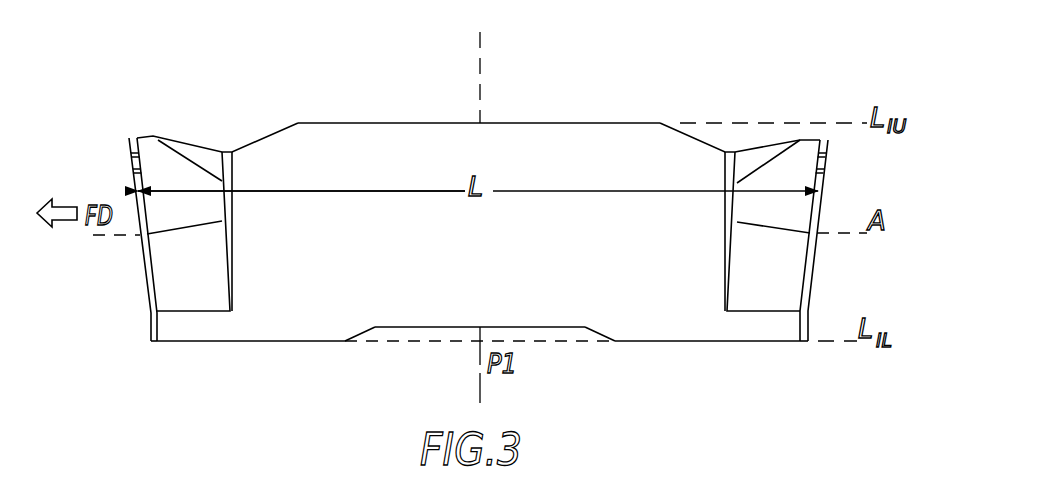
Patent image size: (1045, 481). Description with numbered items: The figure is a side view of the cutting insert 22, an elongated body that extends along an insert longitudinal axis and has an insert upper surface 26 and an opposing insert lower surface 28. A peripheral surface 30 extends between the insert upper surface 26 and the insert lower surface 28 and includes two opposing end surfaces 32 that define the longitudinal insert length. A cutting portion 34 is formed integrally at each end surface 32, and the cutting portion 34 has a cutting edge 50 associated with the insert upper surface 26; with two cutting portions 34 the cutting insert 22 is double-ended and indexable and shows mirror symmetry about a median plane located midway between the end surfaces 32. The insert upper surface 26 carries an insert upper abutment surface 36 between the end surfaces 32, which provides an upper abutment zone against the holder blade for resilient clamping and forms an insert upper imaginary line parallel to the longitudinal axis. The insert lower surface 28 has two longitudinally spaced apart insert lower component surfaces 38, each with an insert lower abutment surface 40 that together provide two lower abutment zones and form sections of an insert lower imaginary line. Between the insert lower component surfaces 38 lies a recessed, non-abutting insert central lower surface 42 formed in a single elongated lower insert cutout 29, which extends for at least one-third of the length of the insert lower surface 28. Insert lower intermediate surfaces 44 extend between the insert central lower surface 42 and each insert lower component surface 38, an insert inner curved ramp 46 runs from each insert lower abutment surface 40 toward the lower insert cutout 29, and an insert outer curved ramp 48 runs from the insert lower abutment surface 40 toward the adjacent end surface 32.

The cutting insert 22 is at (757, 78).
The insert upper surface 26 is at (582, 108).
The insert lower surface 28 is at (757, 427).
The lower insert cutout 29 is at (548, 333).
The peripheral surface 30 is at (352, 145).
The end surfaces 32 is at (146, 275).
The cutting portion 34 is at (141, 128).
The insert upper abutment surface 36 is at (520, 123).
The insert lower component surfaces 38 is at (258, 360).
The insert lower abutment surface 40 is at (193, 341).
The insert central lower surface 42 is at (405, 328).
The insert lower intermediate surfaces 44 is at (366, 330).
The insert inner curved ramp 46 is at (345, 341).
The insert outer curved ramp 48 is at (151, 341).
The cutting edge 50 is at (129, 138).